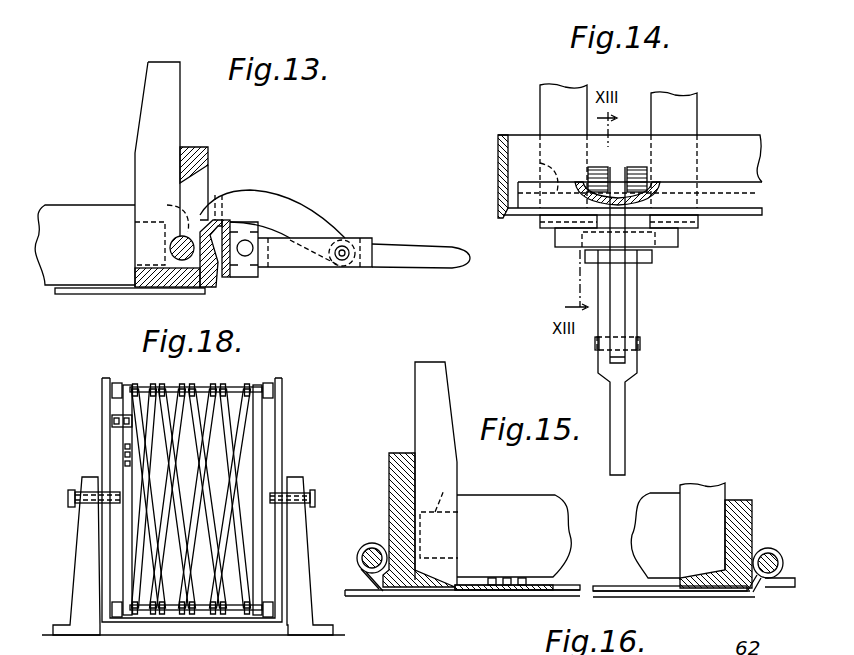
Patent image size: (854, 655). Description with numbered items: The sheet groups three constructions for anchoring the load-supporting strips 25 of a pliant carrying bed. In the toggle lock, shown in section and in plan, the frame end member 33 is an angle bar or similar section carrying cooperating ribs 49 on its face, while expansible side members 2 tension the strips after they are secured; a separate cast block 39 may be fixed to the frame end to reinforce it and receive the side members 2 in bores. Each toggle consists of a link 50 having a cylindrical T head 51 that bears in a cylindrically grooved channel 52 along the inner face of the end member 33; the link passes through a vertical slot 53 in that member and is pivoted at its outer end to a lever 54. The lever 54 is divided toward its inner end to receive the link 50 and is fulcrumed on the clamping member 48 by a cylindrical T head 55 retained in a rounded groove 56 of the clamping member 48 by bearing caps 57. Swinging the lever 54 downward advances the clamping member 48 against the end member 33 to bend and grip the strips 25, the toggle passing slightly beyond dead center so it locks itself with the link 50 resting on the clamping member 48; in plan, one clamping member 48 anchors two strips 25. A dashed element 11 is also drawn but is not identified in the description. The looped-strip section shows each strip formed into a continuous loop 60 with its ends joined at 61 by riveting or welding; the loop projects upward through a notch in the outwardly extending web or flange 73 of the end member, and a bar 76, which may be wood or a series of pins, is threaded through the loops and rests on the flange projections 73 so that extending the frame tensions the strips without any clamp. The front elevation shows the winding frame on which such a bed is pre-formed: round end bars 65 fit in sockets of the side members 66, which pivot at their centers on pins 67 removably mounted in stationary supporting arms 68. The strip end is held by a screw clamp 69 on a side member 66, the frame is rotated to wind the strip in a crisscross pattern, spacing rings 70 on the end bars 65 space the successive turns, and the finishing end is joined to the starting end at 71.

In FIG. 13, the extensible side members 2 is at (85, 245).
In FIG. 15, the extensible side members 2 is at (568, 535).
In FIG. 15, the member 11 is at (439, 514).
In FIG. 14, the load-supporting strips 25 is at (700, 118).
In FIG. 13, the end member 33 is at (203, 288).
In FIG. 15, the end member 33 is at (750, 513).
In FIG. 15, the blocks 39 is at (443, 397).
In FIG. 13, the clamping member 48 is at (258, 270).
In FIG. 14, the clamping member 48 is at (567, 240).
In FIG. 13, the cooperating ribs 49 is at (200, 276).
In FIG. 14, the cooperating ribs 49 is at (509, 216).
In FIG. 13, the link 50 is at (262, 187).
In FIG. 14, the link 50 is at (618, 307).
In FIG. 13, the cylindrical T head 51 is at (168, 250).
In FIG. 14, the cylindrical T head 51 is at (637, 170).
In FIG. 13, the cylindrically grooved channel 52 is at (162, 226).
In FIG. 14, the cylindrically grooved channel 52 is at (540, 163).
In FIG. 13, the vertical slot 53 is at (198, 180).
In FIG. 14, the vertical slot 53 is at (676, 230).
In FIG. 13, the lever 54 is at (395, 250).
In FIG. 14, the lever 54 is at (618, 410).
In FIG. 13, the cylindrical T head 55 is at (253, 236).
In FIG. 14, the cylindrical T head 55 is at (653, 260).
In FIG. 13, the rounded groove 56 is at (233, 277).
In FIG. 13, the bearing caps 57 is at (270, 238).
In FIG. 14, the bearing caps 57 is at (643, 262).
In FIG. 15, the continuous loop 60 is at (563, 587).
In FIG. 15, the strip end joint 61 is at (504, 582).
In FIG. 18, the round bars 65 is at (176, 610).
In FIG. 18, the side members 66 is at (283, 437).
In FIG. 18, the pins 67 is at (322, 489).
In FIG. 18, the stationary supporting arms 68 is at (85, 555).
In FIG. 18, the screw clamp 69 is at (112, 418).
In FIG. 18, the spacing rings 70 is at (227, 614).
In FIG. 18, the joining point 71 is at (125, 456).
In FIG. 15, the web or flange 73 is at (790, 586).
In FIG. 15, the bar 76 is at (767, 549).